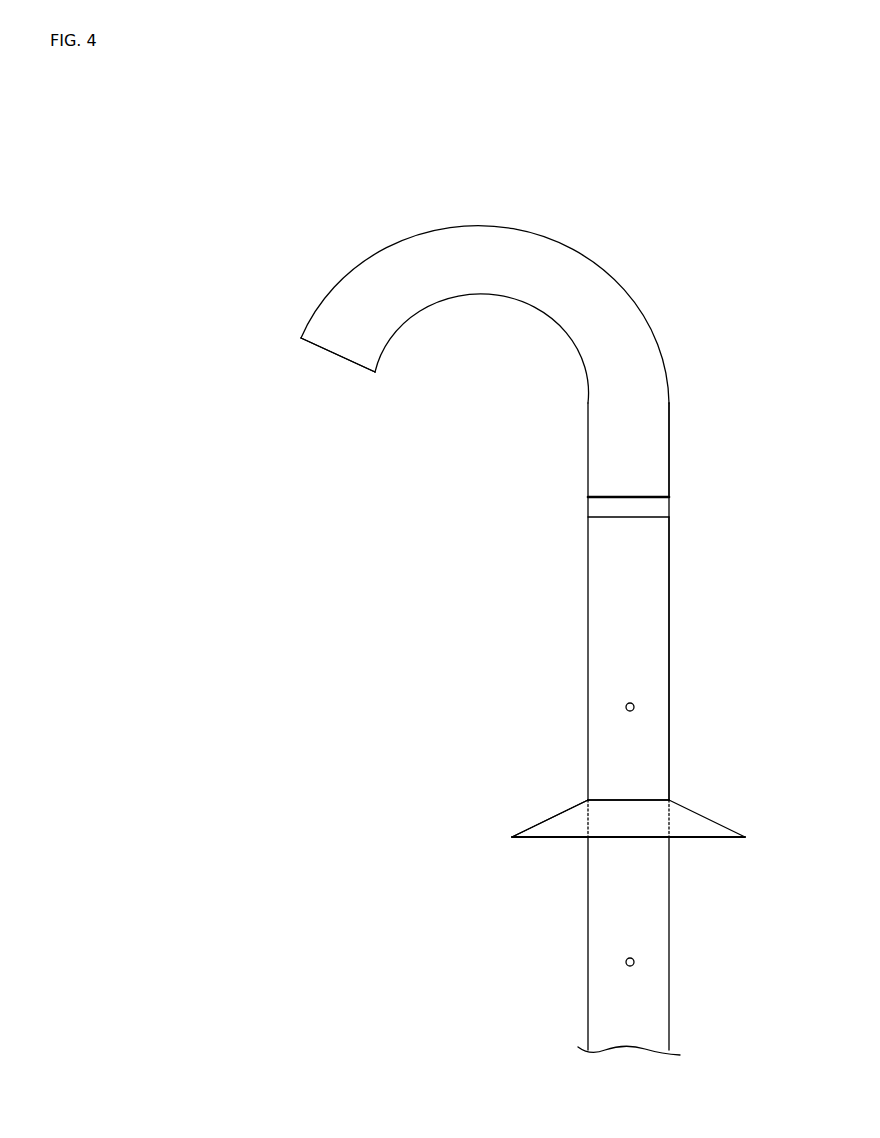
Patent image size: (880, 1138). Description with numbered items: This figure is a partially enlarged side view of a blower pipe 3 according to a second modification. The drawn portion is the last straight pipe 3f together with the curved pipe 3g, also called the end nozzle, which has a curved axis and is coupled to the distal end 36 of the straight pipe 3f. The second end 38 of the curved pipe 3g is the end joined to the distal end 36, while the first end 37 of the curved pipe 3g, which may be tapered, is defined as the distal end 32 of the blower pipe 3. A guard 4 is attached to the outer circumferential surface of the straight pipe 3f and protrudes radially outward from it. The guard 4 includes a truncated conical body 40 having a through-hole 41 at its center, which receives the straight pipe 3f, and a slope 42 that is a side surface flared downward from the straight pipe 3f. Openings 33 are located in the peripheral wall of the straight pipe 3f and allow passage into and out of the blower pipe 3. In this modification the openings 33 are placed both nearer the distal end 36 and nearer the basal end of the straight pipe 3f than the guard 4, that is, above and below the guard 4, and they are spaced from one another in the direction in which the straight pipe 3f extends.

The blower pipe 3 is at (705, 352).
The straight pipe 3f is at (661, 624).
The curved pipe (end nozzle) 3g is at (661, 443).
The guard 4 is at (700, 820).
The distal end of the blower pipe 32 is at (308, 376).
The openings 33 is at (626, 703).
The distal end of the straight pipe 36 is at (588, 522).
The first end of the curved pipe 37 is at (305, 344).
The second end of the curved pipe 38 is at (588, 508).
The truncated conical body 40 is at (568, 833).
The through-hole 41 is at (672, 800).
The slope 42 is at (545, 820).